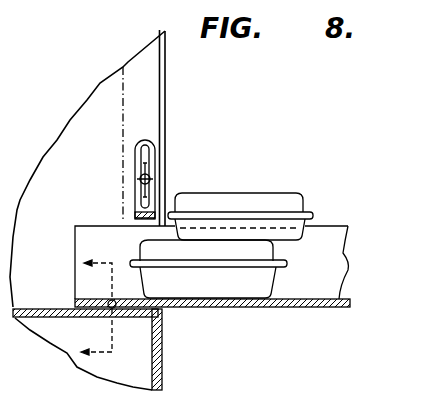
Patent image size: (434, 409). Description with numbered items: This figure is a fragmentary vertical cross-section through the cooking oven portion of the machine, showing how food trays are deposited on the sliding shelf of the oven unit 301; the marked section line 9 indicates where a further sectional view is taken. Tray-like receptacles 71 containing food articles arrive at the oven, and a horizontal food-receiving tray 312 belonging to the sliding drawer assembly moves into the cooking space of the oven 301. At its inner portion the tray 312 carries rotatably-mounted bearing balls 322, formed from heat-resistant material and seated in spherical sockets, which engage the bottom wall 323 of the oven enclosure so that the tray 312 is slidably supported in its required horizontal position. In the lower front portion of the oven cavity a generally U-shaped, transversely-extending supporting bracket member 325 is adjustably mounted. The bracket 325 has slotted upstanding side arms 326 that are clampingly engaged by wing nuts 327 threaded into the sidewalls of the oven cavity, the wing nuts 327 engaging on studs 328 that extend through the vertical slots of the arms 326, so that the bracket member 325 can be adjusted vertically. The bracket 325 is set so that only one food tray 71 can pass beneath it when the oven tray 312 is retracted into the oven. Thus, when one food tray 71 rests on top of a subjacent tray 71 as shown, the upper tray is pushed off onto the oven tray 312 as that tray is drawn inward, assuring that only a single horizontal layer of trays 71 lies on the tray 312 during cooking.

The tray-like receptacle 71 is at (273, 200).
The oven unit 301 is at (164, 372).
The food-receiving tray 312 is at (293, 308).
The bearing ball 322 is at (110, 301).
The bottom wall 323 is at (44, 316).
The supporting bracket member 325 is at (167, 204).
The slotted upstanding side arm 326 is at (135, 147).
The wing nut 327 is at (163, 193).
The stud 328 is at (138, 180).
The section line 9- 9 is at (96, 307).